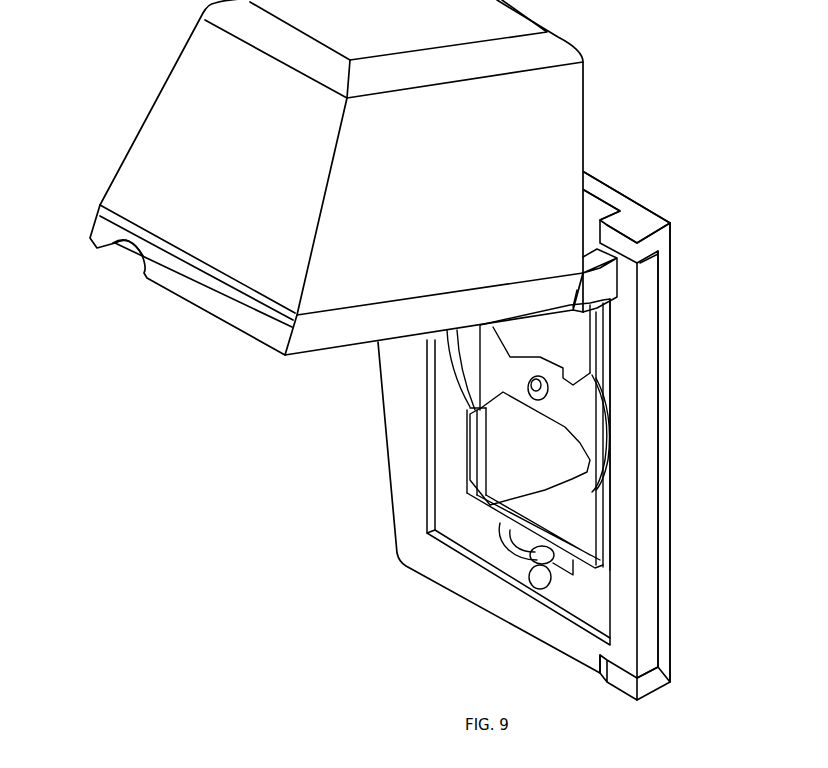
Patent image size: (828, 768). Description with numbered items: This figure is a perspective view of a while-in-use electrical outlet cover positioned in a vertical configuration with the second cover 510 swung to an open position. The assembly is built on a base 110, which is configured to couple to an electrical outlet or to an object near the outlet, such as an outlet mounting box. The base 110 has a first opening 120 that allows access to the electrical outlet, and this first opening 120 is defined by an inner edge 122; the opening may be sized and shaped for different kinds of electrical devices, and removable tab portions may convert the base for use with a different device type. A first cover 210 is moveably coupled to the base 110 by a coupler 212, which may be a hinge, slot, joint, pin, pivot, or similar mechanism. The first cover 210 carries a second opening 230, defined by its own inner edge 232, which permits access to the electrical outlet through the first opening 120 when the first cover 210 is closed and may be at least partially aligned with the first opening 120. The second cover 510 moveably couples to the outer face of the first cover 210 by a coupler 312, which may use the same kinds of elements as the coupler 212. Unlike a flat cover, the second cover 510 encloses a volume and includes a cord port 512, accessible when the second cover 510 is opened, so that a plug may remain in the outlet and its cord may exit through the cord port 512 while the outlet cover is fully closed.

The second cover 510 is at (187, 108).
The cord port 512 is at (127, 253).
The coupler 212 is at (638, 227).
The base 110 is at (662, 272).
The coupler 312 is at (598, 280).
The first cover 210 is at (648, 345).
The inner edge 122 is at (473, 450).
The first opening 120 is at (550, 452).
The inner edge 232 is at (432, 512).
The second opening 230 is at (472, 532).